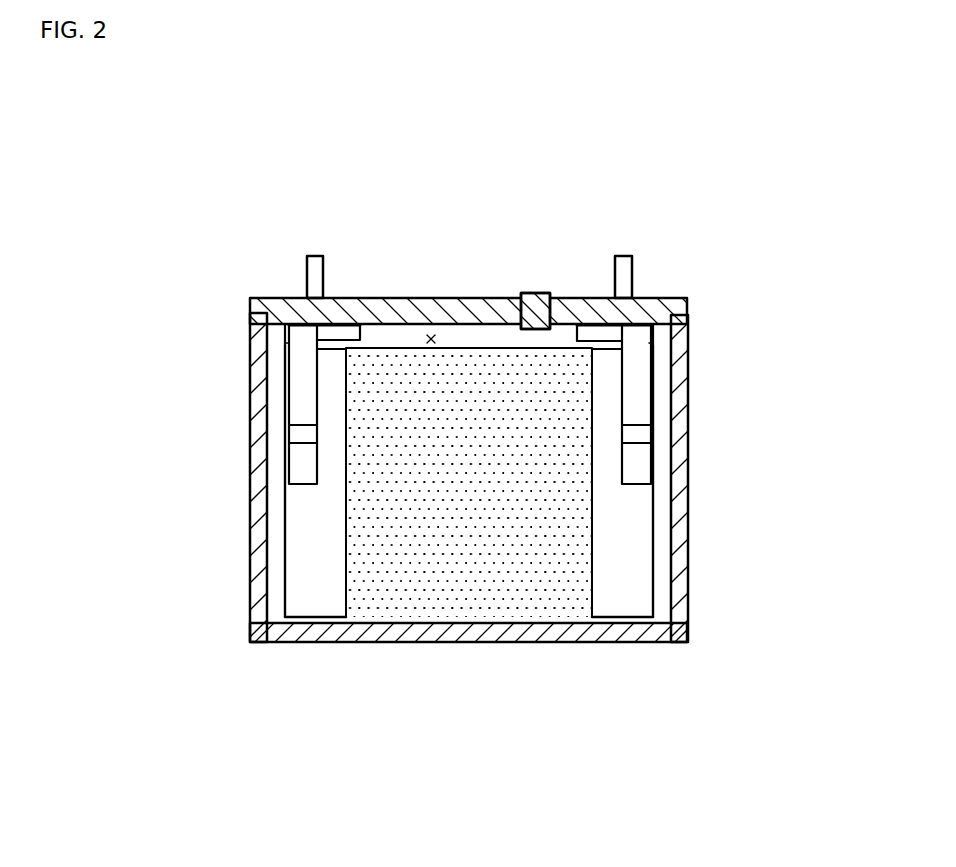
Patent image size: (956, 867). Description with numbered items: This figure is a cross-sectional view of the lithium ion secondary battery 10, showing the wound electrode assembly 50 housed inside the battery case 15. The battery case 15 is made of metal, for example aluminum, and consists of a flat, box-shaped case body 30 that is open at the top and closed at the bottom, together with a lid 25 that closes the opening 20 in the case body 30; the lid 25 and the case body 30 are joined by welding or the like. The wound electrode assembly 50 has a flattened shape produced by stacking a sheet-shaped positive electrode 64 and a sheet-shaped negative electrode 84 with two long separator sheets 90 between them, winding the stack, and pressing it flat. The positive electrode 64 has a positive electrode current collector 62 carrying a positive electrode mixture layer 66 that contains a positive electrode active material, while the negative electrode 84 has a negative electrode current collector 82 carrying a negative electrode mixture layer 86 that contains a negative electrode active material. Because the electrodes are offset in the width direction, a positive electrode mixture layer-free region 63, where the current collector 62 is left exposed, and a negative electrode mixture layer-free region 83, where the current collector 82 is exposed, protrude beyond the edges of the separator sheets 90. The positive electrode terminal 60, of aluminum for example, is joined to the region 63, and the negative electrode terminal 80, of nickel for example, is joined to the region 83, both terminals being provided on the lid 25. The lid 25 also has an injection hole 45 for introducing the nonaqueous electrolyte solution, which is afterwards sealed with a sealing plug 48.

The lithium ion secondary battery 10 is at (739, 201).
The battery case 15 is at (767, 300).
The lid 25 is at (684, 306).
The case body 30 is at (684, 348).
The opening 20 is at (432, 336).
The wound electrode assembly 50 is at (474, 336).
The sealing plug 48 is at (530, 306).
The injection hole 45 is at (546, 310).
The positive electrode terminal 60 is at (314, 262).
The negative electrode terminal 80 is at (624, 261).
The positive electrode current collector 62 is at (287, 608).
The positive electrode mixture layer-free region 63 is at (303, 527).
The positive electrode 64 is at (282, 576).
The positive electrode mixture layer 66 is at (413, 580).
The negative electrode current collector 82 is at (655, 607).
The negative electrode mixture layer-free region 83 is at (628, 532).
The negative electrode 84 is at (657, 576).
The negative electrode mixture layer 86 is at (562, 580).
The separator sheet 90 is at (483, 600).